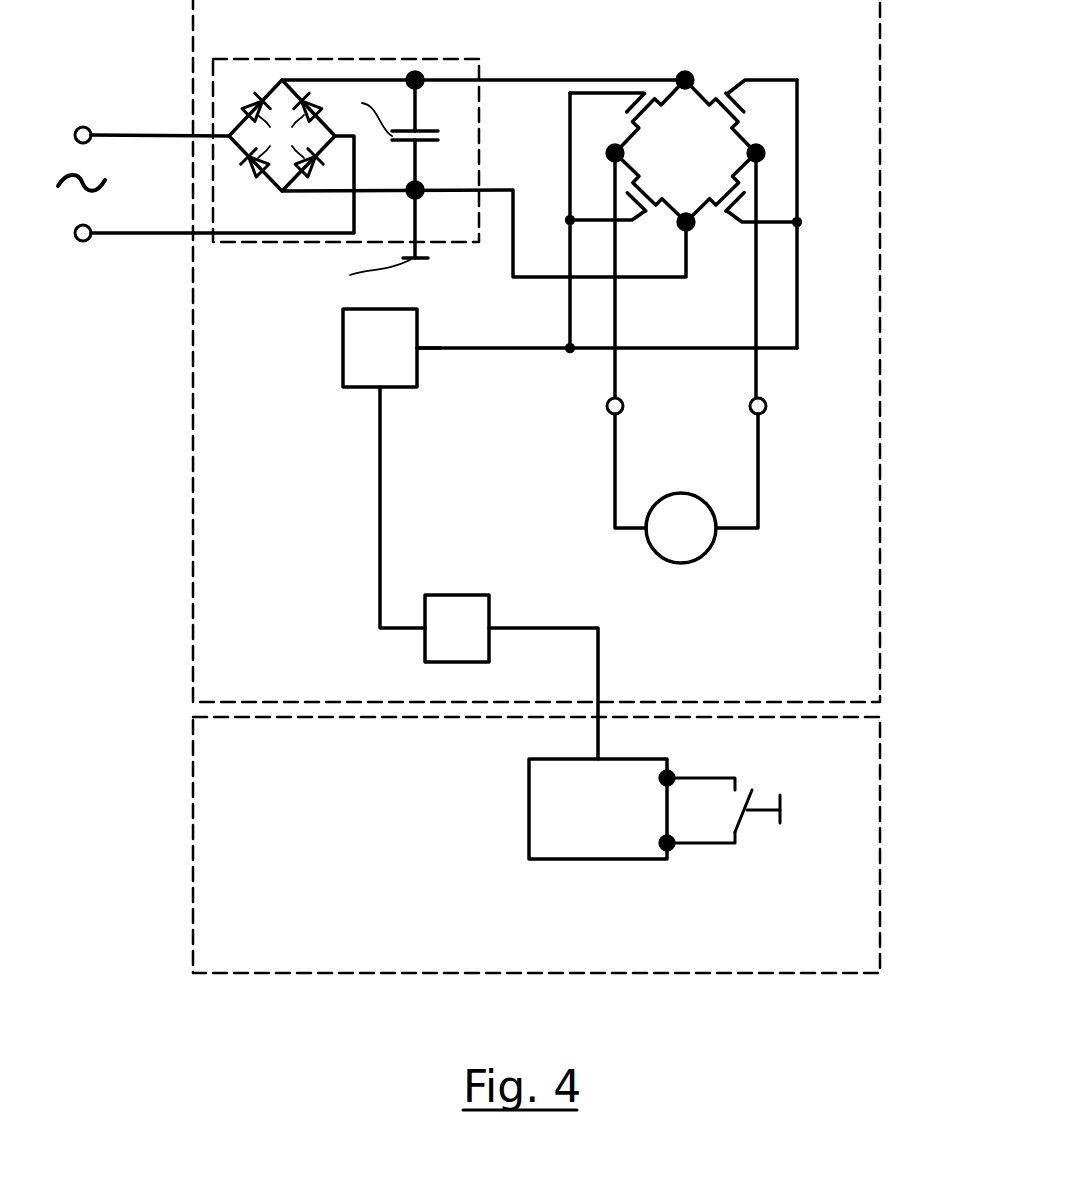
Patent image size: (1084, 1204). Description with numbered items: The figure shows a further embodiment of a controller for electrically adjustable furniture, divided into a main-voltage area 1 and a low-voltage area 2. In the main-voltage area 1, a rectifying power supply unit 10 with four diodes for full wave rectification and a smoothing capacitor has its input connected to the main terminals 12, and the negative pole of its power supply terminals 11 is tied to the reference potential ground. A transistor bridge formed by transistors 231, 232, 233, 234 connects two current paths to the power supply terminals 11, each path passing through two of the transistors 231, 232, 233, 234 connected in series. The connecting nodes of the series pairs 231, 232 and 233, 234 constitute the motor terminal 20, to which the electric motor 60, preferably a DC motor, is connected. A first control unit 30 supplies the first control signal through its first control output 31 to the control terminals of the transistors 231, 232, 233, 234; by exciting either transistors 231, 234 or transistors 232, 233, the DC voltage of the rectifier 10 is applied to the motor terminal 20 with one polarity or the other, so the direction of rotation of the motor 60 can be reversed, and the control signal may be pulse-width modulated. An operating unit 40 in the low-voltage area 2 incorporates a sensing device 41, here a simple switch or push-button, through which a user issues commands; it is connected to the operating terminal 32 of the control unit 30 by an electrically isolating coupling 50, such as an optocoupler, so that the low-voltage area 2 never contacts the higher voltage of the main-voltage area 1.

The main-voltage area 1 is at (880, 112).
The low-voltage area 2 is at (880, 742).
The rectifying power supply unit 10 is at (222, 246).
The power supply terminals 11 is at (682, 90).
The main terminals 12 is at (92, 226).
The motor terminal 20 is at (755, 412).
The first control unit 30 is at (340, 352).
The first control output 31 is at (420, 350).
The operating terminal 32 is at (373, 388).
The operating unit 40 is at (578, 875).
The sensing device 41 is at (740, 820).
The electrically isolating coupling 50 is at (470, 595).
The electric motor 60 is at (712, 533).
The transistor 231 is at (633, 95).
The transistor 232 is at (637, 208).
The transistor 233 is at (740, 87).
The transistor 234 is at (730, 222).